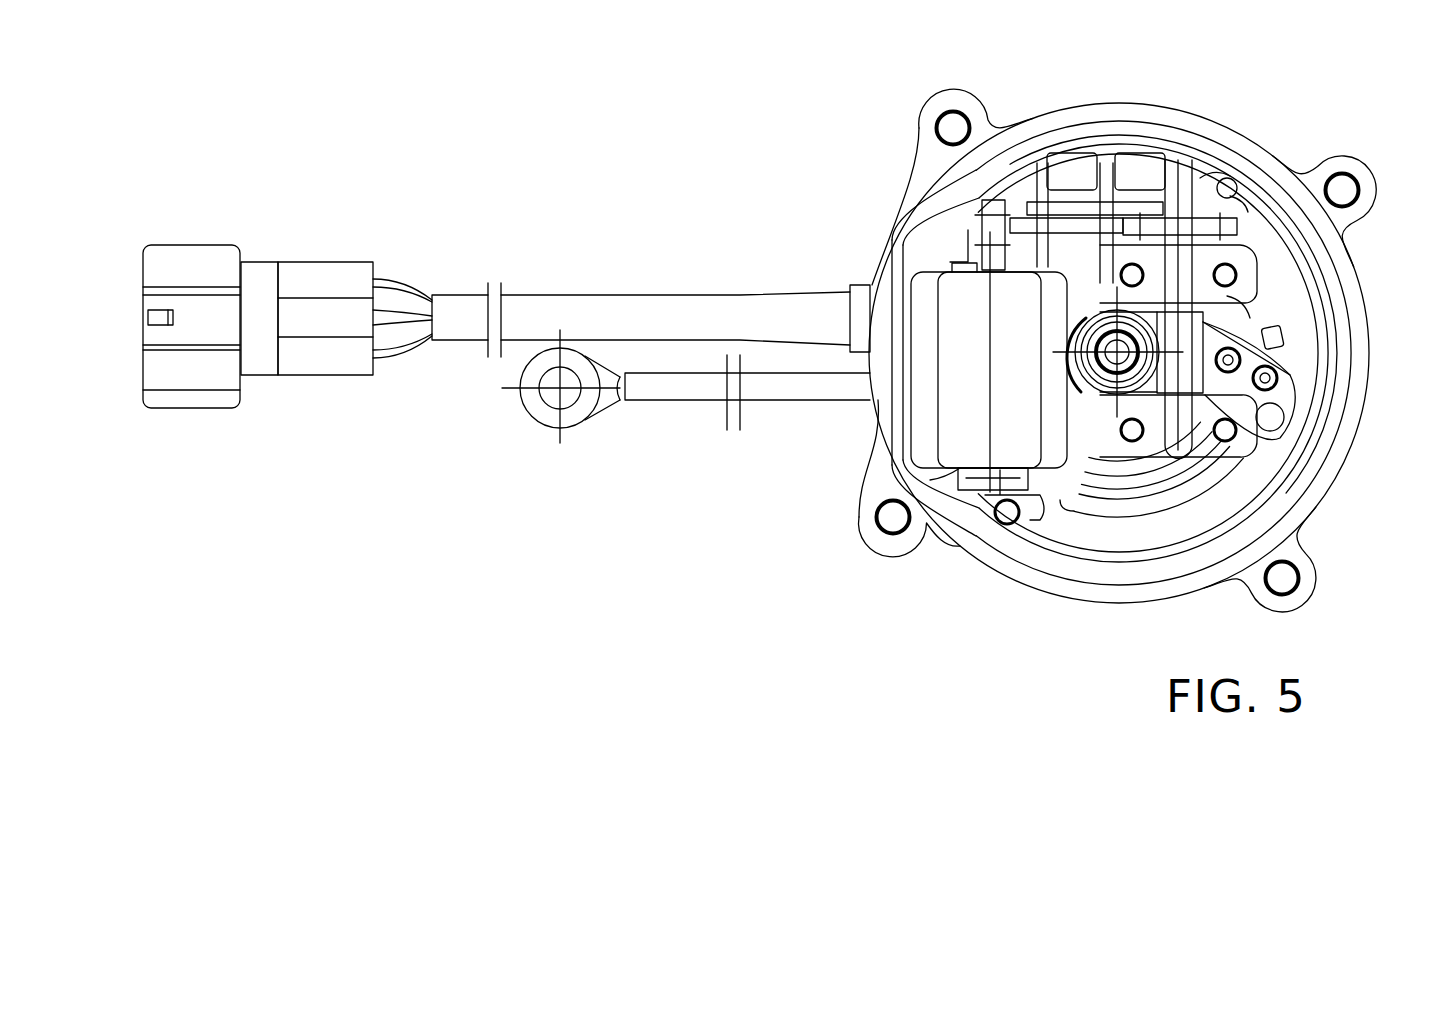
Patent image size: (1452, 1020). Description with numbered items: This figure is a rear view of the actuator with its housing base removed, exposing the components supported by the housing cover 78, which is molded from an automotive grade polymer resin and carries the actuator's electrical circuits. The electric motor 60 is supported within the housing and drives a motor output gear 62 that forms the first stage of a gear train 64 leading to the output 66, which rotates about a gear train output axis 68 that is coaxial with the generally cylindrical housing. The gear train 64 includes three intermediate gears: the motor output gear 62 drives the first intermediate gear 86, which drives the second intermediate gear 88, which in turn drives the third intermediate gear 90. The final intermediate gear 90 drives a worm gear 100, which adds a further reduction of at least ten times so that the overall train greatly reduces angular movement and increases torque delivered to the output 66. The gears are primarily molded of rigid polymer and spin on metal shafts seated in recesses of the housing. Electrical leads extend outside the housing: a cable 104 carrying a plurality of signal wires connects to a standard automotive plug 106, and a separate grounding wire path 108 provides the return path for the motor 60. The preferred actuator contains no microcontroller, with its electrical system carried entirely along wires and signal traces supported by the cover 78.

The electric motor 60 is at (960, 328).
The motor output gear 62 is at (985, 215).
The gear train 64 is at (1148, 180).
The output 66 is at (1068, 378).
The gear train output axis 68 is at (1085, 395).
The housing cover 78 is at (935, 155).
The first intermediate gear 86 is at (1067, 205).
The second intermediate gear 88 is at (1138, 188).
The third intermediate gear 90 is at (1206, 216).
The worm gear 100 is at (1163, 353).
The cable 104 is at (598, 300).
The automotive plug 106 is at (325, 275).
The grounding wire path 108 is at (668, 398).